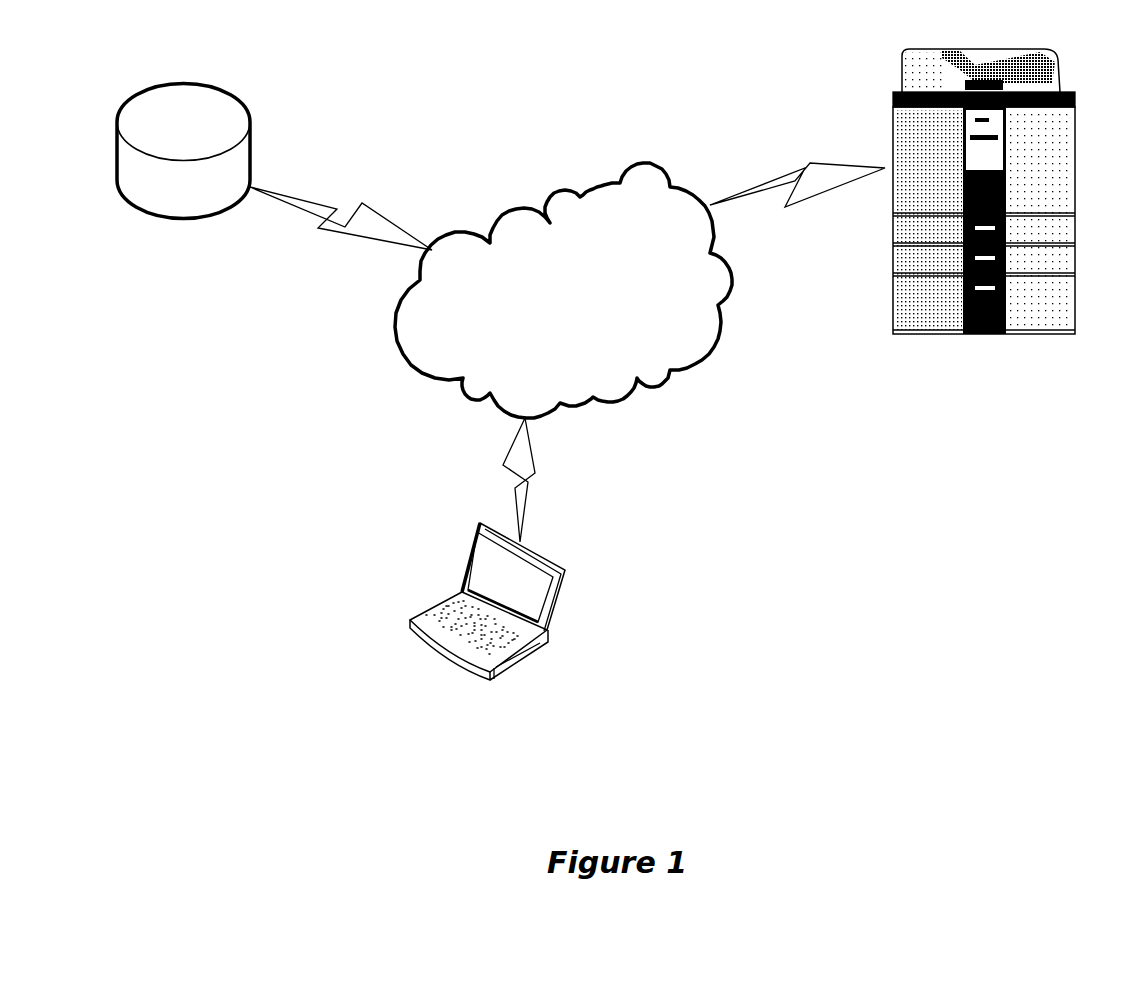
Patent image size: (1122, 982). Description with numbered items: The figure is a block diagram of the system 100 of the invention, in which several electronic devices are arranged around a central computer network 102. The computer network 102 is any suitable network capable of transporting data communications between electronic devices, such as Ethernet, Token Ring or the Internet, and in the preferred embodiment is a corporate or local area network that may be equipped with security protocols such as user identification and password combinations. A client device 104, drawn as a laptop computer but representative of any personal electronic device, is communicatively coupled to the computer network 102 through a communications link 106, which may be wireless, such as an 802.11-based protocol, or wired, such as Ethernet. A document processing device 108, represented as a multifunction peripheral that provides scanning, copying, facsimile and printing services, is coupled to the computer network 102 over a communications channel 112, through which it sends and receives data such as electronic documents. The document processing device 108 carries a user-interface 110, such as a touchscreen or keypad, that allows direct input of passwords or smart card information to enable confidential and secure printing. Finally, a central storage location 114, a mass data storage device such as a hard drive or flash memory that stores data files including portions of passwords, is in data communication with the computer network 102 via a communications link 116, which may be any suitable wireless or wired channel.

The system 100 is at (760, 34).
The computer network 102 is at (646, 162).
The client device 104 is at (558, 565).
The communications link 106 is at (534, 472).
The document processing device 108 is at (1036, 47).
The user-interface 110 is at (895, 96).
The communications channel 112 is at (810, 168).
The central storage location 114 is at (238, 102).
The communications link 116 is at (358, 205).